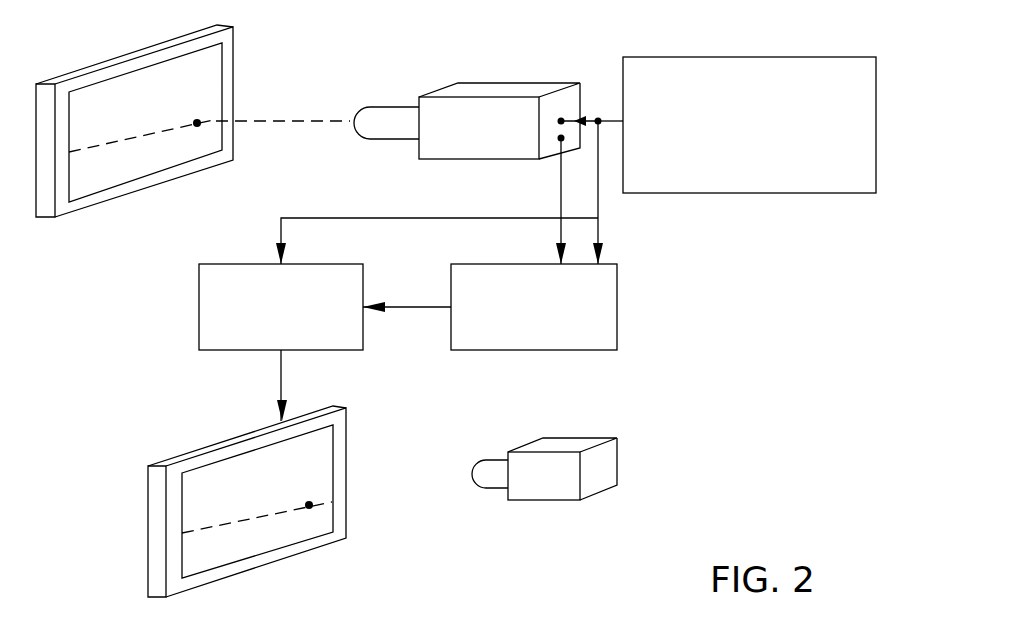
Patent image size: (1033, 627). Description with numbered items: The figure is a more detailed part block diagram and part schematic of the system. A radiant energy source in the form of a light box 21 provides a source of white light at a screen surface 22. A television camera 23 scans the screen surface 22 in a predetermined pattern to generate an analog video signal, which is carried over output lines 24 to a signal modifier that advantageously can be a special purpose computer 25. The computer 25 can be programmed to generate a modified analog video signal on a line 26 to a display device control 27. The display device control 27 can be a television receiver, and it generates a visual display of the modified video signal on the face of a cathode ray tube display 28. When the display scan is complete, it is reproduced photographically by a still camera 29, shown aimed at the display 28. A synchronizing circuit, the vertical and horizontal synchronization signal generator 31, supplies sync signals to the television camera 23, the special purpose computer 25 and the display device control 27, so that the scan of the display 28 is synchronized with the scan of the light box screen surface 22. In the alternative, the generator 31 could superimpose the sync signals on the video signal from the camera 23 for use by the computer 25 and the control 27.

The light box 21 is at (116, 50).
The screen surface 22 is at (212, 75).
The television camera 23 is at (505, 87).
The camera output signal lines 24 is at (561, 192).
The special purpose computer 25 is at (610, 290).
The line 26 is at (433, 308).
The display device control 27 is at (357, 285).
The cathode ray tube display 28 is at (157, 519).
The still camera 29 is at (560, 492).
The vertical and horizontal synchronization signal generator 31 is at (820, 187).